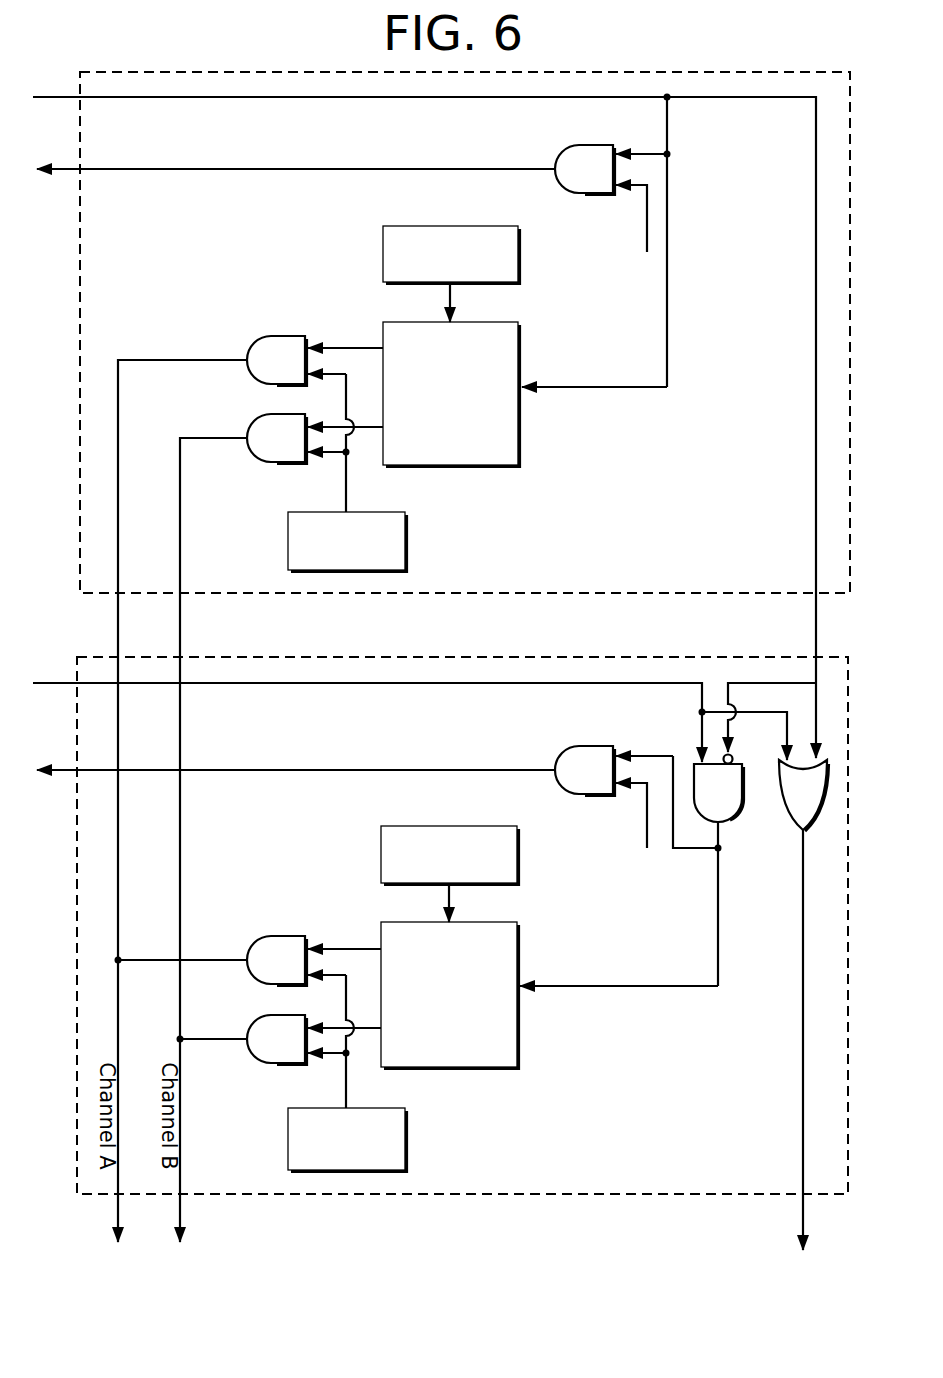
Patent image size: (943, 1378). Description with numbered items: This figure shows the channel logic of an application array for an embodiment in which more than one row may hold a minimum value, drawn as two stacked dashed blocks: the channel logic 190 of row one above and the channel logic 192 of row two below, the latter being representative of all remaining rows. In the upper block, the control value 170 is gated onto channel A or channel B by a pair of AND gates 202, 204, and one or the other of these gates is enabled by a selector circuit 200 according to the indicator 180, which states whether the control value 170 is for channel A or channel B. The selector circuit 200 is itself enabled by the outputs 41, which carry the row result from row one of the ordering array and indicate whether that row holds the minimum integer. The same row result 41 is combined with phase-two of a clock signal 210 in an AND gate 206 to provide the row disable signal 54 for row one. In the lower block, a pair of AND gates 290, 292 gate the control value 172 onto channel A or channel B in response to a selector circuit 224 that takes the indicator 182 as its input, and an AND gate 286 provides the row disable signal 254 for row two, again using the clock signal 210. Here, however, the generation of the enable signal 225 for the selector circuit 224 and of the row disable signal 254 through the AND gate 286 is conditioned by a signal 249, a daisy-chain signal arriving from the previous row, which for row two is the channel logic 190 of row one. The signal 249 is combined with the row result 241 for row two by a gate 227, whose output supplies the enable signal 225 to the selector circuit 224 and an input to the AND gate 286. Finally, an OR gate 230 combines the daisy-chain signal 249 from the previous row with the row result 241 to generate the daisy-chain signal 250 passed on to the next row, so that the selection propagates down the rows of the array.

The outputs 41 is at (222, 99).
The row disable signal 54 is at (177, 170).
The control value 170 is at (325, 555).
The control value 172 is at (325, 1153).
The indicator 180 is at (429, 267).
The indicator 182 is at (428, 867).
The channel logic 190 is at (642, 511).
The channel logic 192 is at (624, 1109).
The selector circuit 200 is at (422, 404).
The AND gate 202 is at (255, 371).
The AND gate 204 is at (255, 449).
The AND gate 206 is at (563, 179).
The clock signal 210 is at (647, 228).
The selector circuit 224 is at (422, 1004).
The enable signal 225 is at (567, 985).
The gate 227 is at (700, 804).
The OR gate 230 is at (785, 804).
The row result 241 is at (222, 685).
The signal 249 is at (815, 627).
The daisy chain signal 250 is at (803, 1218).
The row disable signal 254 is at (222, 772).
The AND gate 286 is at (563, 780).
The AND gate 290 is at (255, 971).
The AND gate 292 is at (255, 1050).